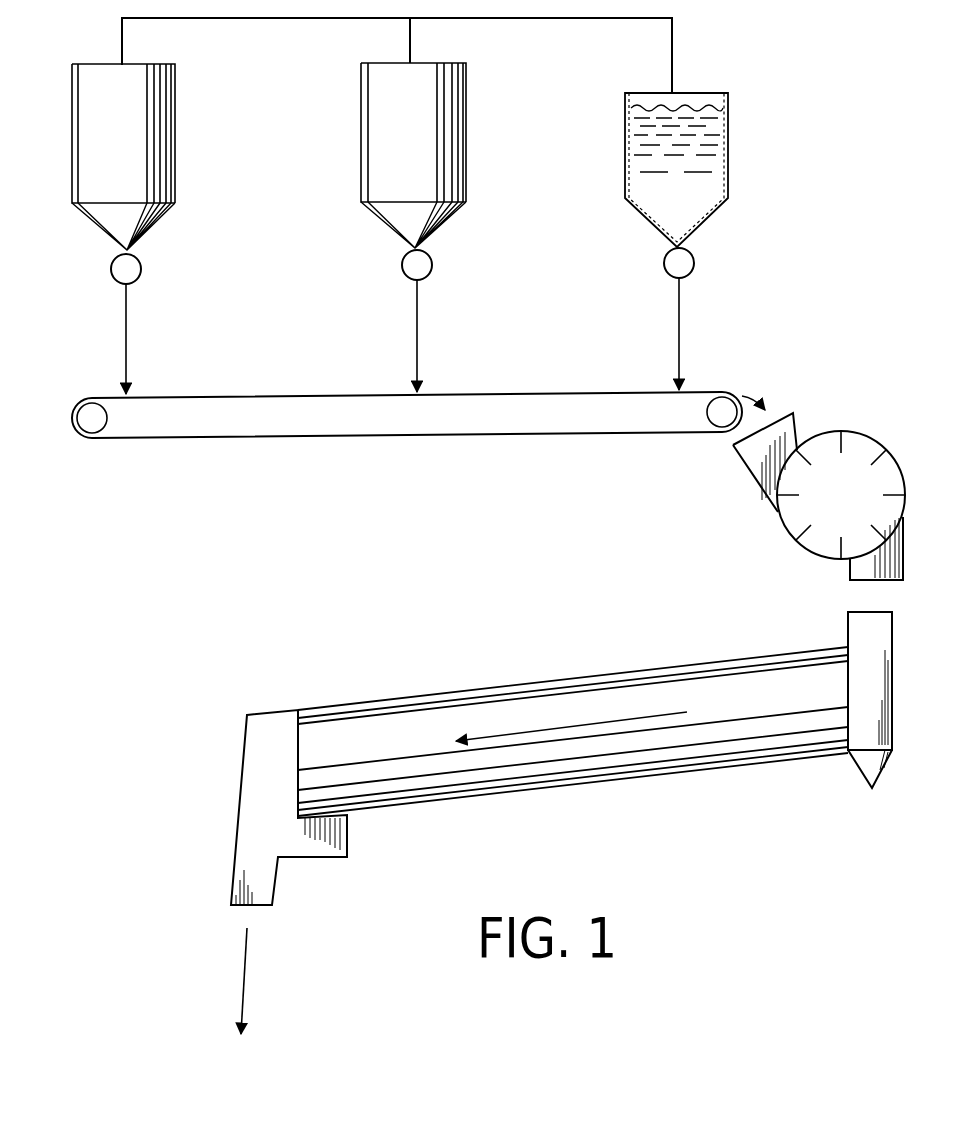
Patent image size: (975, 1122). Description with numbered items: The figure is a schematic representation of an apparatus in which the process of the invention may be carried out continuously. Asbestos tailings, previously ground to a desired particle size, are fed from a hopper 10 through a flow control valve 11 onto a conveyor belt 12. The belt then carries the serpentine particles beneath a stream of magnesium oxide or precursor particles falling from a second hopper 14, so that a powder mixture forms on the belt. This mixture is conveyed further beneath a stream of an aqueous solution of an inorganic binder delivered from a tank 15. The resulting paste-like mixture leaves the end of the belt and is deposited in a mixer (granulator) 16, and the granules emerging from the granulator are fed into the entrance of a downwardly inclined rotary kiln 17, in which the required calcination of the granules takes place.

The hopper 10 is at (157, 113).
The flow control valve 11 is at (110, 268).
The conveyor belt 12 is at (326, 397).
The hopper 14 is at (466, 97).
The tank 15 is at (728, 125).
The mixer (granulator) 16 is at (867, 444).
The rotary kiln 17 is at (703, 668).